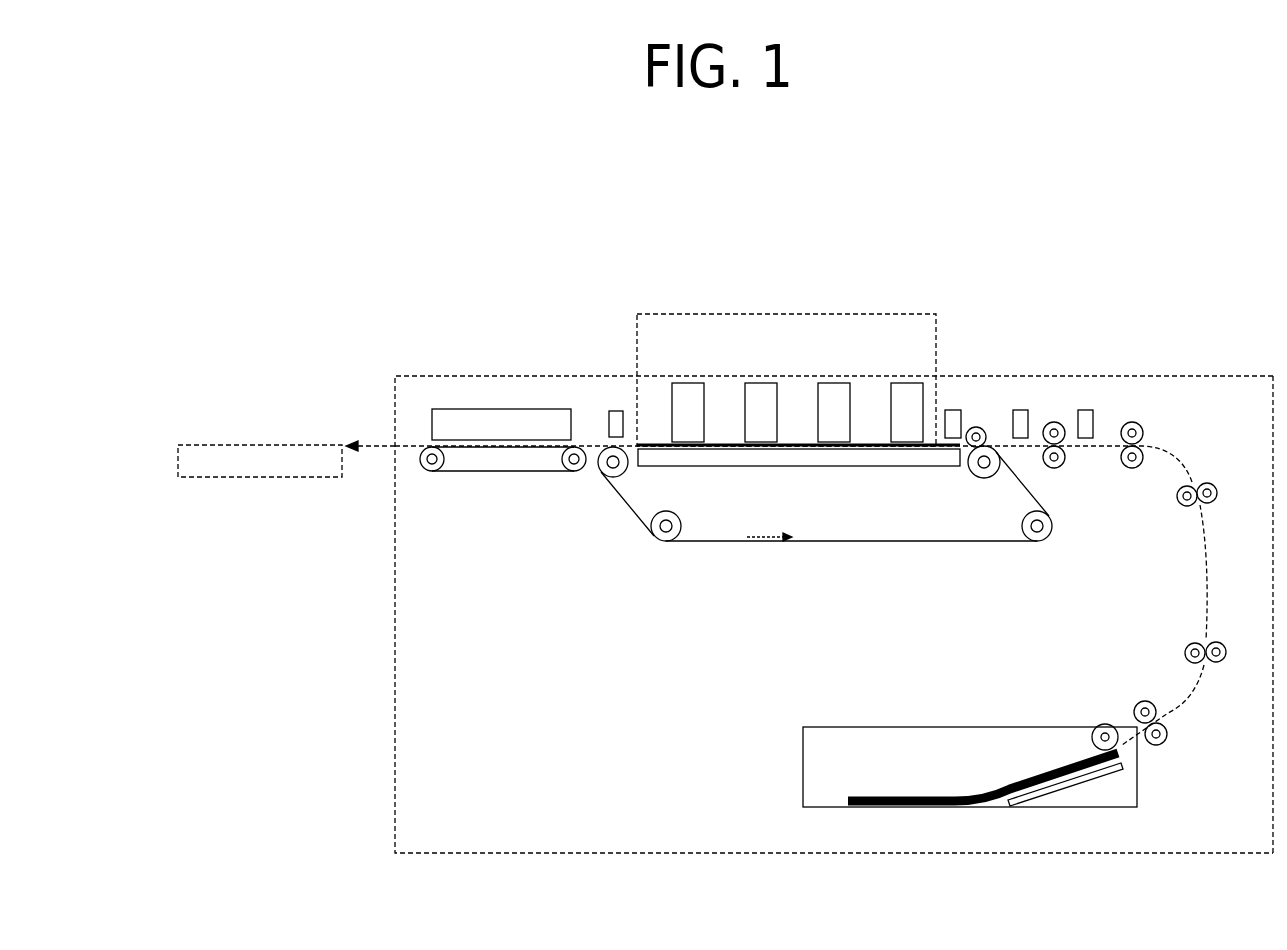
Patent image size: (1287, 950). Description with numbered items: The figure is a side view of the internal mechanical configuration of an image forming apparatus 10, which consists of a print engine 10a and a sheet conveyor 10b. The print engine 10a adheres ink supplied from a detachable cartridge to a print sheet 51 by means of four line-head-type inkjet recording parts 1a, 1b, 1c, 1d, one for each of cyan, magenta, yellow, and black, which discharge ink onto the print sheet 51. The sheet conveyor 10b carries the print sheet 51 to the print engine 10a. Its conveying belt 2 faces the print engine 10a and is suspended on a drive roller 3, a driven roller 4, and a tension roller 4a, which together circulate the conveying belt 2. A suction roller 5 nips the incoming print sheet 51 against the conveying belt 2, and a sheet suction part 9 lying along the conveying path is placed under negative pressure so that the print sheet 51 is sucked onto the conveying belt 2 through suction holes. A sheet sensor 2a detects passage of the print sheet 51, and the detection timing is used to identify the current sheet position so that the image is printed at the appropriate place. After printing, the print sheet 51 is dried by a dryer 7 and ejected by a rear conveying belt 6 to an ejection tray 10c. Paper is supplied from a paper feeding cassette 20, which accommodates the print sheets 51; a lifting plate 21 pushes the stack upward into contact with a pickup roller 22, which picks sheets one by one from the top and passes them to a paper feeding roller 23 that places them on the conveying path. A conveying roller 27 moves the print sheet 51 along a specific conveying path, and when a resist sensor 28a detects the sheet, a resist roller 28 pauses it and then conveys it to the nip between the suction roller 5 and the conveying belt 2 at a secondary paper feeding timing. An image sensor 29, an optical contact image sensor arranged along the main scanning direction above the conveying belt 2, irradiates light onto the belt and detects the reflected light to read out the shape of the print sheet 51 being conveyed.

The image forming apparatus 10 is at (1238, 263).
The print engine 10a is at (887, 312).
The sheet conveyor 10b is at (1236, 375).
The ejection tray 10c is at (307, 443).
The inkjet recording part 1a is at (901, 383).
The inkjet recording part 1b is at (828, 383).
The inkjet recording part 1c is at (755, 383).
The inkjet recording part 1d is at (682, 383).
The conveying belt 2 is at (845, 543).
The sheet sensor 2a is at (613, 410).
The drive roller 3 is at (605, 473).
The driven roller 4 is at (990, 472).
The tension roller 4a is at (655, 541).
The suction roller 5 is at (980, 429).
The rear conveying belt 6 is at (490, 472).
The dryer 7 is at (537, 409).
The sheet suction part 9 is at (913, 466).
The paper feeding cassette 20 is at (803, 757).
The lifting plate 21 is at (1030, 800).
The pickup roller 22 is at (1094, 726).
The paper feeding roller 23 is at (1136, 705).
The conveying roller 27 is at (1135, 422).
The resist roller 28 is at (1056, 422).
The resist sensor 28a is at (1088, 410).
The image sensor 29 is at (957, 410).
The print sheet 51 is at (866, 797).